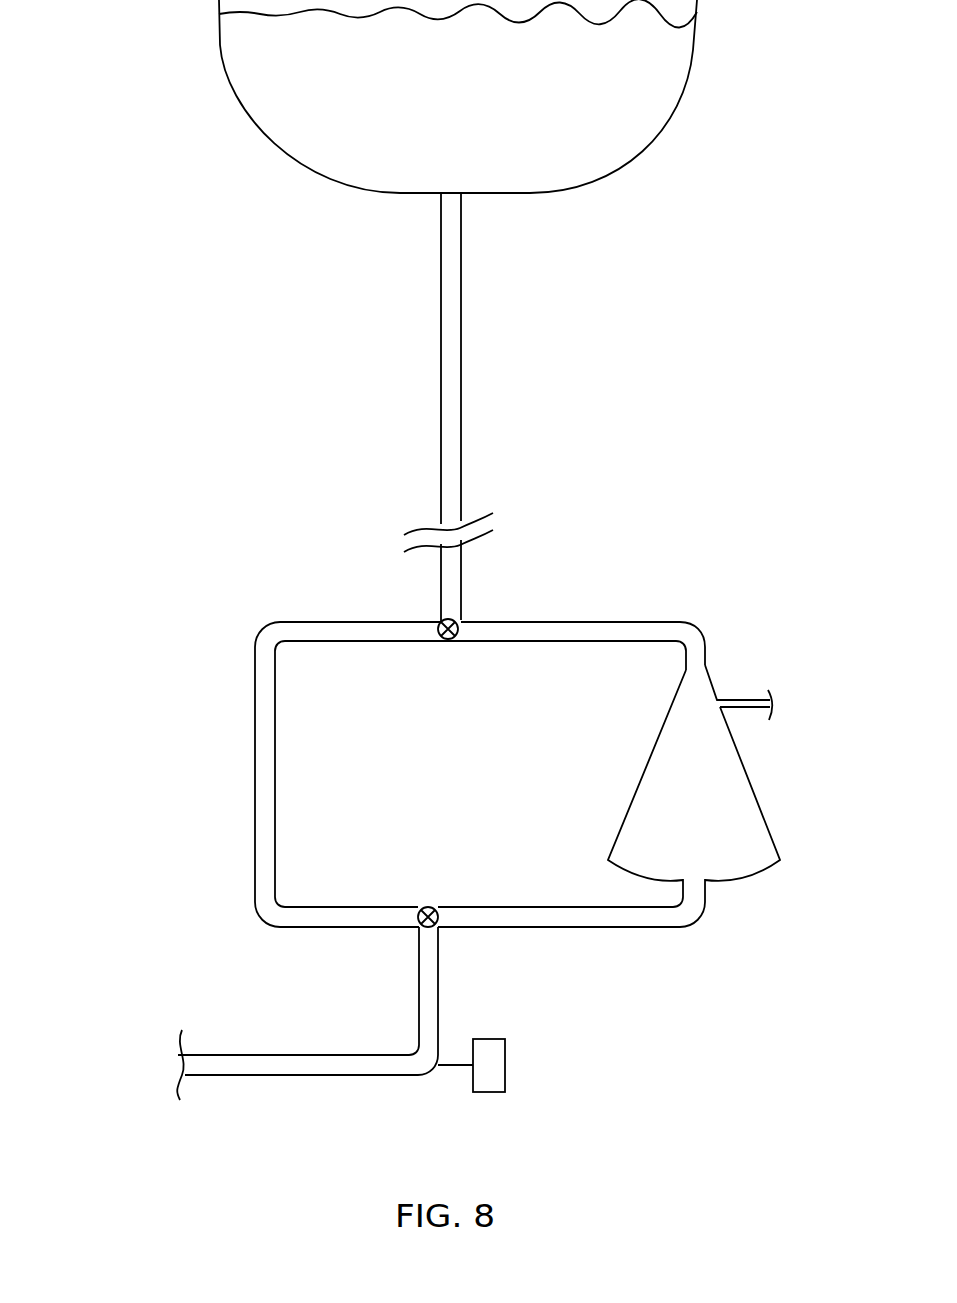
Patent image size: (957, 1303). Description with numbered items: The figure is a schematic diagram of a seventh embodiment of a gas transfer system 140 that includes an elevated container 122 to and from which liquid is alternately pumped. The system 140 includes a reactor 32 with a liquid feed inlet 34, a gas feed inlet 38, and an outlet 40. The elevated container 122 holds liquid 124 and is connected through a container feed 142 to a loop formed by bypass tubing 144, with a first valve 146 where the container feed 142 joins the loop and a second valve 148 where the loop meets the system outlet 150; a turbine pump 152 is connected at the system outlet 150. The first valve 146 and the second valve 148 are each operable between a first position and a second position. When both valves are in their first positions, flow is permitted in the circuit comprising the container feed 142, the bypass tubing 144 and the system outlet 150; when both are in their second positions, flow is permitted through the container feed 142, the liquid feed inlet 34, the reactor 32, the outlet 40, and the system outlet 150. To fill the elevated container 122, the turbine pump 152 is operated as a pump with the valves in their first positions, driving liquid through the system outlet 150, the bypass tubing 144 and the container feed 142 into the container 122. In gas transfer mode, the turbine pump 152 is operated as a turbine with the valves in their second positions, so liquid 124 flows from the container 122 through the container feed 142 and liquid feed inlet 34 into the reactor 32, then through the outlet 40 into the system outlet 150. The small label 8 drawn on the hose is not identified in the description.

The elevated container 122 is at (690, 92).
The liquid 124 is at (627, 78).
The gas transfer system 140 is at (212, 430).
The container feed 142 is at (461, 383).
The bypass tubing 144 is at (255, 752).
The first valve 146 is at (458, 620).
The second valve 148 is at (438, 905).
The system outlet 150 is at (419, 993).
The turbine pump 152 is at (490, 1092).
The liquid feed inlet 34 is at (605, 622).
The gas feed inlet 38 is at (768, 692).
The reactor 32 is at (767, 822).
The outlet 40 is at (586, 927).
The hose 8 is at (295, 1066).